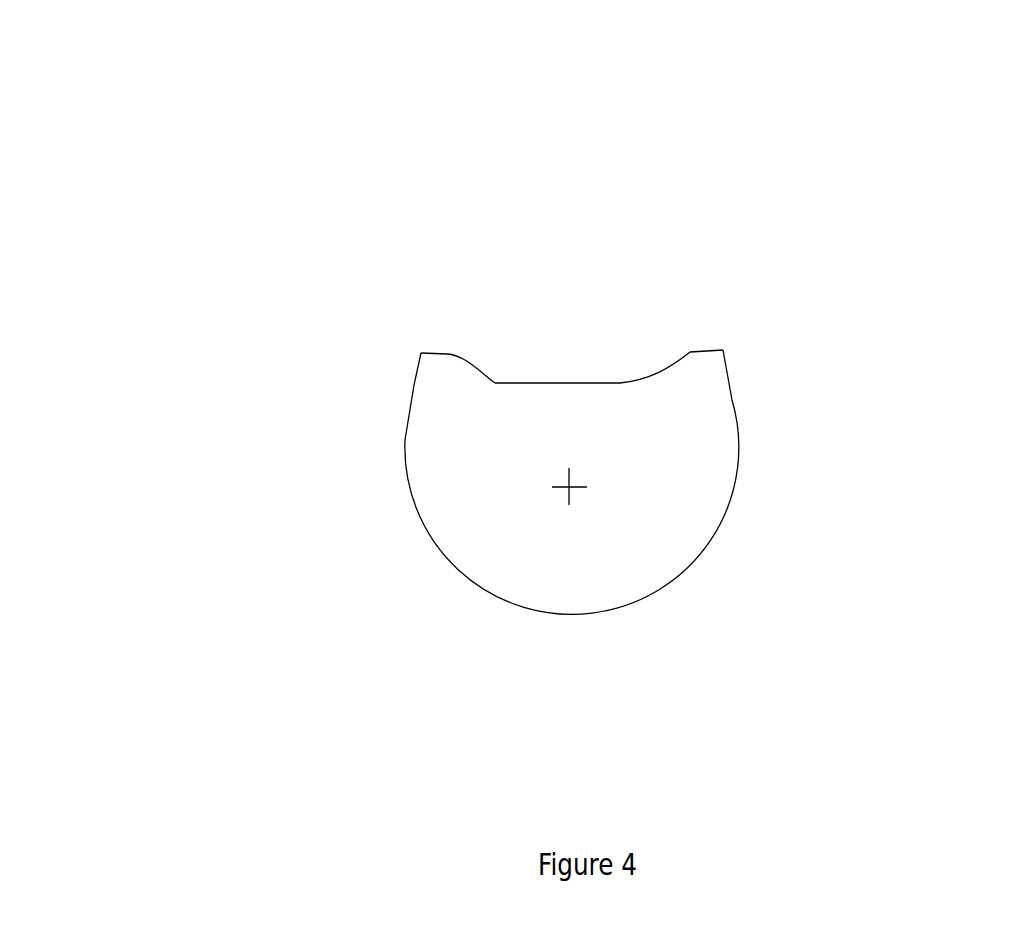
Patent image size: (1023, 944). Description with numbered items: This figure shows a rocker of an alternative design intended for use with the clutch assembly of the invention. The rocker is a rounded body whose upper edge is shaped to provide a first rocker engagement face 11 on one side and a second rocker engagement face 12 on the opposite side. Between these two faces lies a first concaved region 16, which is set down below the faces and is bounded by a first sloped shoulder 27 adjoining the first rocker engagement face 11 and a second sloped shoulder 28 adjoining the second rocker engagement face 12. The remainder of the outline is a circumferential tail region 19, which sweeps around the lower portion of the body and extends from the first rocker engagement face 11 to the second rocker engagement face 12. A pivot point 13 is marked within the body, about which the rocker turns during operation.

The first rocker engagement face 11 is at (415, 383).
The second rocker engagement face 12 is at (732, 400).
The pivot point 13 is at (569, 487).
The first concaved region 16 is at (525, 383).
The circumferential tail region 19 is at (623, 608).
The first shoulder 27 is at (467, 363).
The second shoulder 28 is at (678, 362).